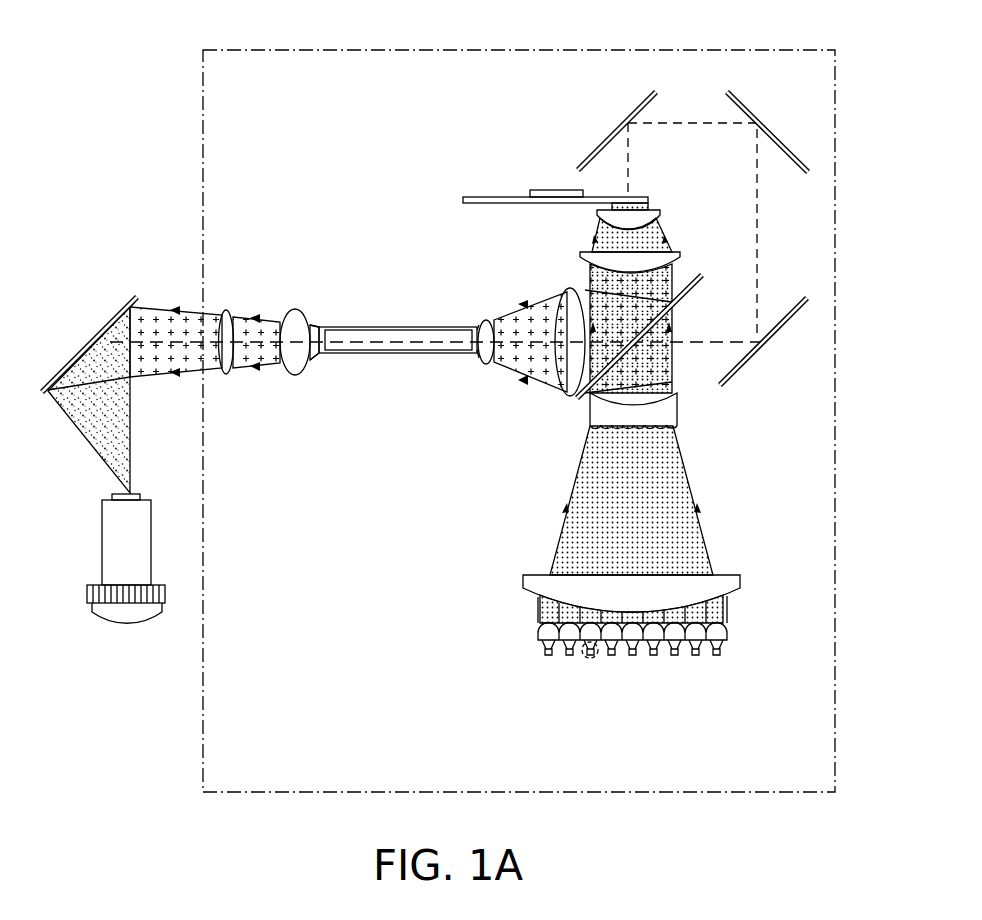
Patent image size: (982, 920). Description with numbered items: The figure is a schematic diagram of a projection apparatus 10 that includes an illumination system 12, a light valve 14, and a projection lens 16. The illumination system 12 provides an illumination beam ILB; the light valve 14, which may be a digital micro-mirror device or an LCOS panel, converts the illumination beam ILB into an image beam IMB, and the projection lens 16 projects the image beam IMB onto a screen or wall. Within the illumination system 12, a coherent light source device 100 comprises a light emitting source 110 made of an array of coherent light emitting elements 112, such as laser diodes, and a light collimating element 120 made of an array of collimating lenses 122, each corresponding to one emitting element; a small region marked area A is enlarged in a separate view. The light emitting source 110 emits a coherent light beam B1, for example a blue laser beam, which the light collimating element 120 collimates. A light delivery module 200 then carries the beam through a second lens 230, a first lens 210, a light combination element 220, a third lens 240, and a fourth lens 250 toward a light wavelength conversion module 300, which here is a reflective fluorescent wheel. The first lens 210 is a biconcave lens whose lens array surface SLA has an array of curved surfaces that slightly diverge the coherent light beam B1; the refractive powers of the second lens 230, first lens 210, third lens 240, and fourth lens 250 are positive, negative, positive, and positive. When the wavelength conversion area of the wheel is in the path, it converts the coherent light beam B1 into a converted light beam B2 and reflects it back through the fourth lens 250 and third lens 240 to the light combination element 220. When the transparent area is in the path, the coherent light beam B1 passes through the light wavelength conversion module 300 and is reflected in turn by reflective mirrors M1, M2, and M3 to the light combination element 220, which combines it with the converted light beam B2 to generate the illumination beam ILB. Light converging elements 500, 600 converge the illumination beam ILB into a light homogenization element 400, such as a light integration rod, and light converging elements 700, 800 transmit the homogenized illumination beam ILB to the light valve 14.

The projection apparatus 10 is at (838, 840).
The illumination system 12 is at (622, 50).
The light valve 14 is at (110, 320).
The projection lens 16 is at (108, 550).
The coherent light source device 100 is at (680, 699).
The light emitting source 110 is at (641, 684).
The coherent light emitting elements 112 is at (714, 652).
The light collimating element 120 is at (680, 676).
The collimating lenses 122 is at (724, 636).
The light delivery module 200 is at (298, 590).
The first lens 210 is at (676, 430).
The light combination element 220 is at (579, 397).
The second lens 230 is at (730, 582).
The third lens 240 is at (680, 262).
The fourth lens 250 is at (660, 222).
The light wavelength conversion module 300 is at (463, 200).
The light homogenization element 400 is at (400, 353).
The light converging element 500 is at (567, 295).
The light converging element 600 is at (486, 318).
The light converging element 700 is at (294, 309).
The light converging element 800 is at (227, 310).
The reflective mirror M1 is at (640, 103).
The reflective mirror M2 is at (745, 98).
The reflective mirror M3 is at (768, 342).
The lens array surface SLA is at (674, 429).
The area A is at (597, 675).
The coherent light beam B1 is at (196, 343).
The converted light beam B2 is at (155, 322).
The illumination beam ILB is at (171, 284).
The image beam IMB is at (122, 430).